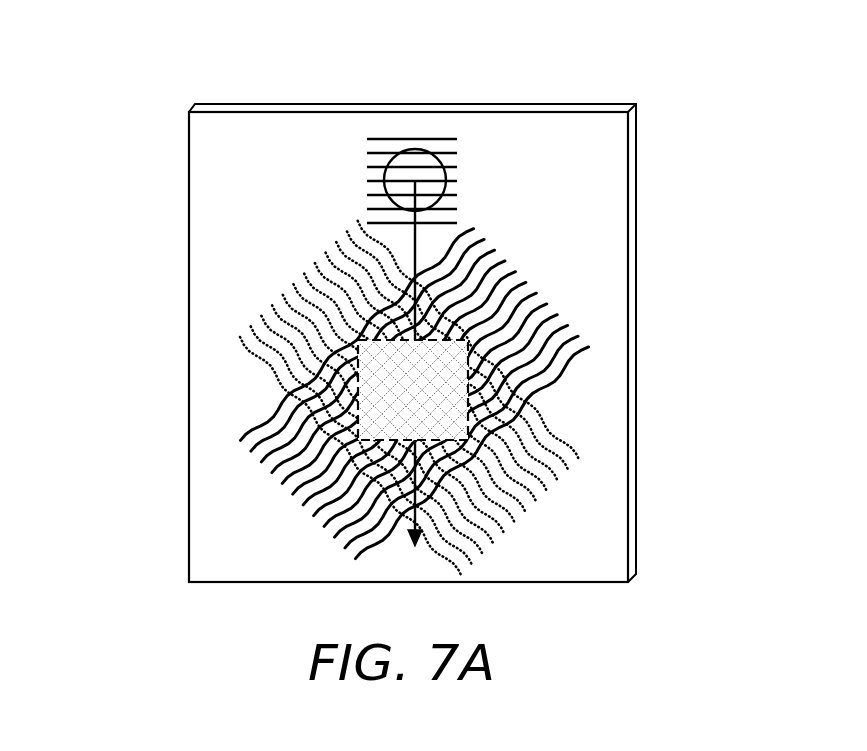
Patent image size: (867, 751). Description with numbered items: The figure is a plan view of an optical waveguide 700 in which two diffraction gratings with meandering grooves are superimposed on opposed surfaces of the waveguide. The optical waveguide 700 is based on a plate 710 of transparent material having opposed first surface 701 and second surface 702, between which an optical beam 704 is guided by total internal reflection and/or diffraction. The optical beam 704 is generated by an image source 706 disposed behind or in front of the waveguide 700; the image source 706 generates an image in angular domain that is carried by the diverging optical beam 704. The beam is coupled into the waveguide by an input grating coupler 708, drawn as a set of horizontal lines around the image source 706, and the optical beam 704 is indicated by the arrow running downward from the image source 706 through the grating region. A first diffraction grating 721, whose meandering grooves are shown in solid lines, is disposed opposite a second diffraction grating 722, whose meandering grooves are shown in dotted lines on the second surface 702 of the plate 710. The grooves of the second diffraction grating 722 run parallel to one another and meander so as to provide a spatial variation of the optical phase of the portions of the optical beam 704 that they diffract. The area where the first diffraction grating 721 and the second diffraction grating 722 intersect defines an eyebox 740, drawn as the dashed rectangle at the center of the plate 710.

The optical waveguide 700 is at (668, 404).
The first surface 701 is at (189, 158).
The second surface 702 is at (636, 187).
The optical beam 704 is at (415, 240).
The image source 706 is at (417, 150).
The input grating coupler 708 is at (379, 139).
The plate 710 is at (257, 552).
The first diffraction grating 721 is at (538, 305).
The second diffraction grating 722 is at (275, 305).
The eyebox 740 is at (358, 425).